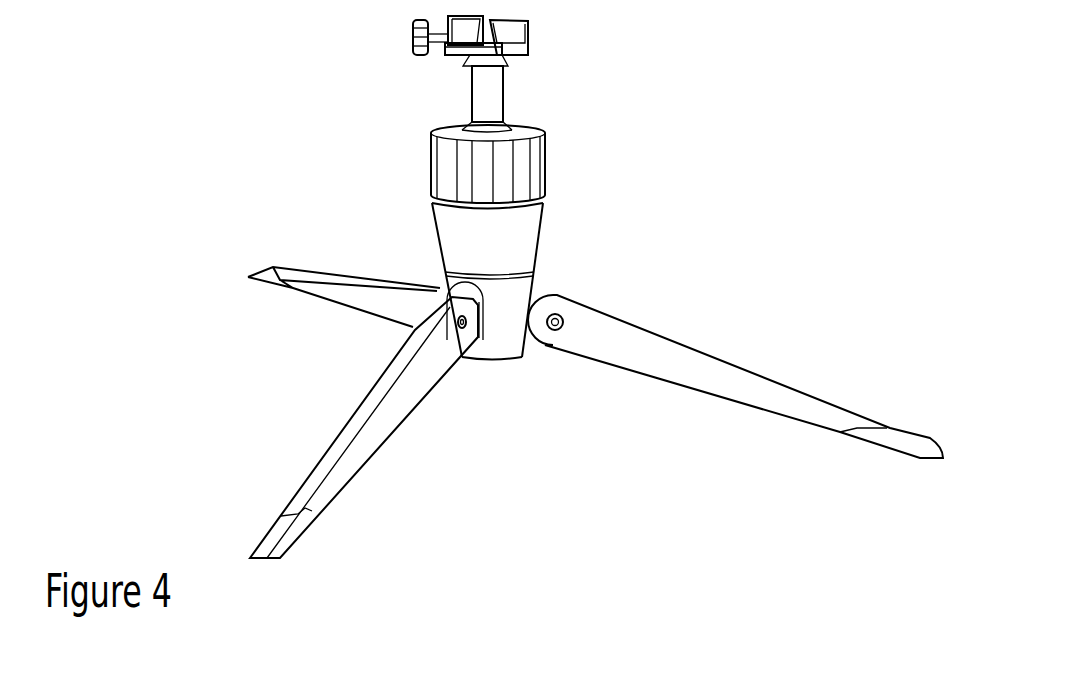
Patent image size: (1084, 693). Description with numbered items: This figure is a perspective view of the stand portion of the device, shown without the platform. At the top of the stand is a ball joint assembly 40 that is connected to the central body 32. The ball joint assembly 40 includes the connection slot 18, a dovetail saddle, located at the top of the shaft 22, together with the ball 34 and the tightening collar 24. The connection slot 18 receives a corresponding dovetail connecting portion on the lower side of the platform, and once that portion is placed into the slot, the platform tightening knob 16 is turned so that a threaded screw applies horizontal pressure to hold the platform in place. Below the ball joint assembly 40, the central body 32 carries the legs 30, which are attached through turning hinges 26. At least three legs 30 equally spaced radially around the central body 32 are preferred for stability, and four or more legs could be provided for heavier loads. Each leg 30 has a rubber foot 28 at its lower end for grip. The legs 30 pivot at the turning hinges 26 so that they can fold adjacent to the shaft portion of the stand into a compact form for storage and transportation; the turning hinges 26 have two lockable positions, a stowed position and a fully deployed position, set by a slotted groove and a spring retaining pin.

The platform tightening knob 16 is at (413, 40).
The connection slot 18 is at (510, 33).
The shaft 22 is at (477, 90).
The tightening collar 24 is at (433, 160).
The turning hinges 26 is at (462, 330).
The rubber feet 28 is at (302, 523).
The legs 30 is at (368, 413).
The central body 32 is at (443, 240).
The ball 34 is at (500, 128).
The ball joint assembly 40 is at (608, 17).